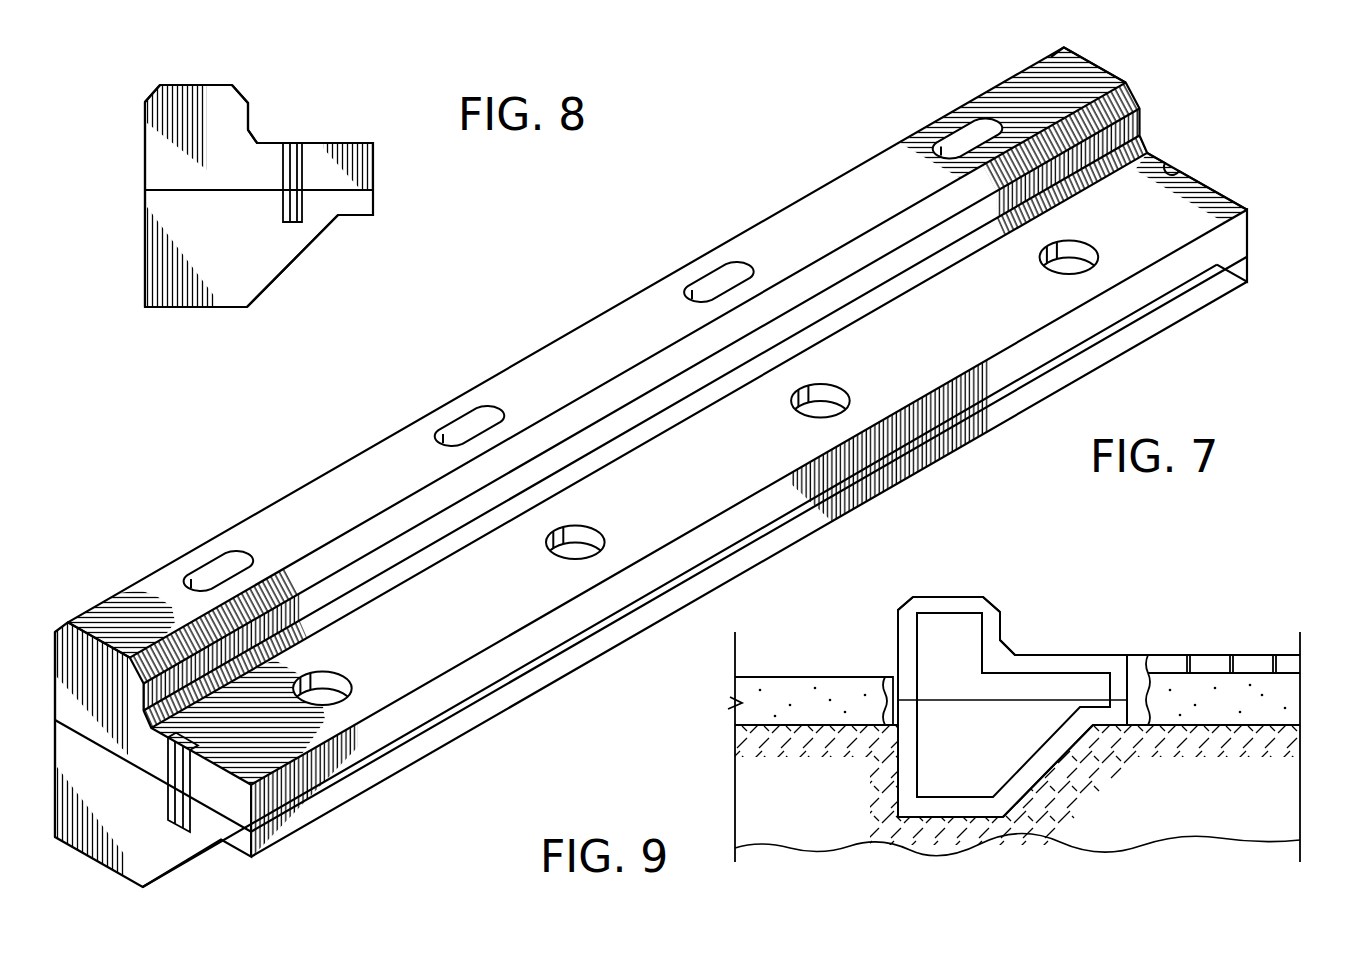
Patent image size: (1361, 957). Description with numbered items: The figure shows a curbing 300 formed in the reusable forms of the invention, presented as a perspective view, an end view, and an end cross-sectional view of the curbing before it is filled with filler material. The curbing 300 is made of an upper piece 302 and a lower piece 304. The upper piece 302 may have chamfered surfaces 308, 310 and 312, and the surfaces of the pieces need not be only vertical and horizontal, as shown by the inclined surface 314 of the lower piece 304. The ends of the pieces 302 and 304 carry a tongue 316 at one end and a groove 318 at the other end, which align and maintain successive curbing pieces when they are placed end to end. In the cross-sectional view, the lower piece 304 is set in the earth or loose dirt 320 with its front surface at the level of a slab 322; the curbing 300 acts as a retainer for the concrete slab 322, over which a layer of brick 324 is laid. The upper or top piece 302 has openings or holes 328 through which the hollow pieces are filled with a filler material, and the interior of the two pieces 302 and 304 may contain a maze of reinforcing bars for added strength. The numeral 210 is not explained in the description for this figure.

In FIG. 7, the curbing 300 is at (786, 164).
In FIG. 8, the curbing 300 is at (340, 92).
In FIG. 9, the curbing 300 is at (1100, 597).
In FIG. 7, the upper piece 302 is at (307, 482).
In FIG. 8, the upper piece 302 is at (145, 151).
In FIG. 8, the lower piece 304 is at (145, 249).
In FIG. 8, the chamfered surface 308 is at (150, 92).
In FIG. 9, the chamfered surface 308 is at (898, 609).
In FIG. 8, the top surface 210 is at (242, 89).
In FIG. 7, the chamfered surface 310 is at (633, 376).
In FIG. 9, the chamfered surface 310 is at (988, 597).
In FIG. 7, the chamfered surface 312 is at (593, 463).
In FIG. 8, the chamfered surface 312 is at (256, 138).
In FIG. 9, the chamfered surface 312 is at (1006, 648).
In FIG. 8, the surface 314 is at (283, 273).
In FIG. 9, the surface 314 is at (1062, 762).
In FIG. 7, the tongue 316 is at (167, 822).
In FIG. 8, the tongue 316 is at (283, 163).
In FIG. 7, the groove 318 is at (1178, 175).
In FIG. 9, the earth or loose dirt 320 is at (845, 750).
In FIG. 9, the concrete slab 322 is at (1245, 690).
In FIG. 9, the layer of brick 324 is at (1167, 657).
In FIG. 7, the holes 328 is at (458, 418).